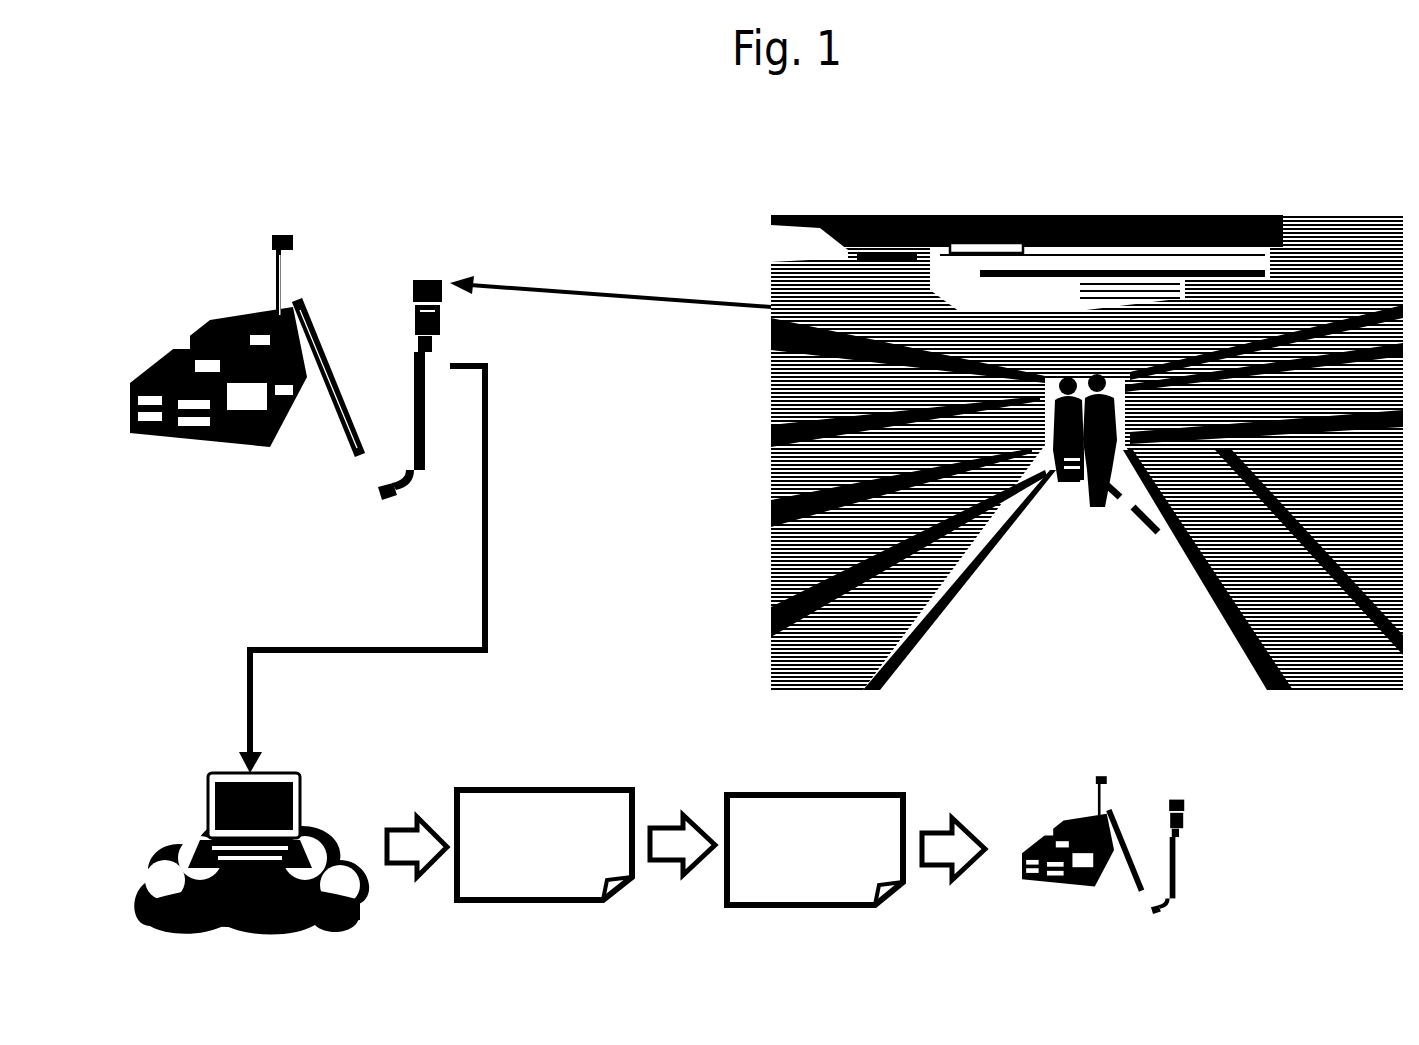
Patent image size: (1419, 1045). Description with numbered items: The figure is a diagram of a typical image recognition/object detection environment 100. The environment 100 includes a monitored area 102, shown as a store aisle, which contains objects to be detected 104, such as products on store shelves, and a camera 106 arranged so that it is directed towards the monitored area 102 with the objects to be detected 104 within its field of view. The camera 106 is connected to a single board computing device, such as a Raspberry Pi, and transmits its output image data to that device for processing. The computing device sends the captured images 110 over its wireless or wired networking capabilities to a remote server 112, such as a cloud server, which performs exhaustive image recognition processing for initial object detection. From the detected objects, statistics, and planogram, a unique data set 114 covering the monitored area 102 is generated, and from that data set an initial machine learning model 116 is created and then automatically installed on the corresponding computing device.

The image recognition/object detection environment 100 is at (434, 205).
The monitored area 102 is at (1087, 431).
The objects to be detected 104 is at (1160, 597).
The camera 106 is at (483, 390).
The images 110 is at (403, 569).
The remote server 112 is at (284, 829).
The unique data set 114 is at (544, 820).
The initial machine learning model 116 is at (815, 825).